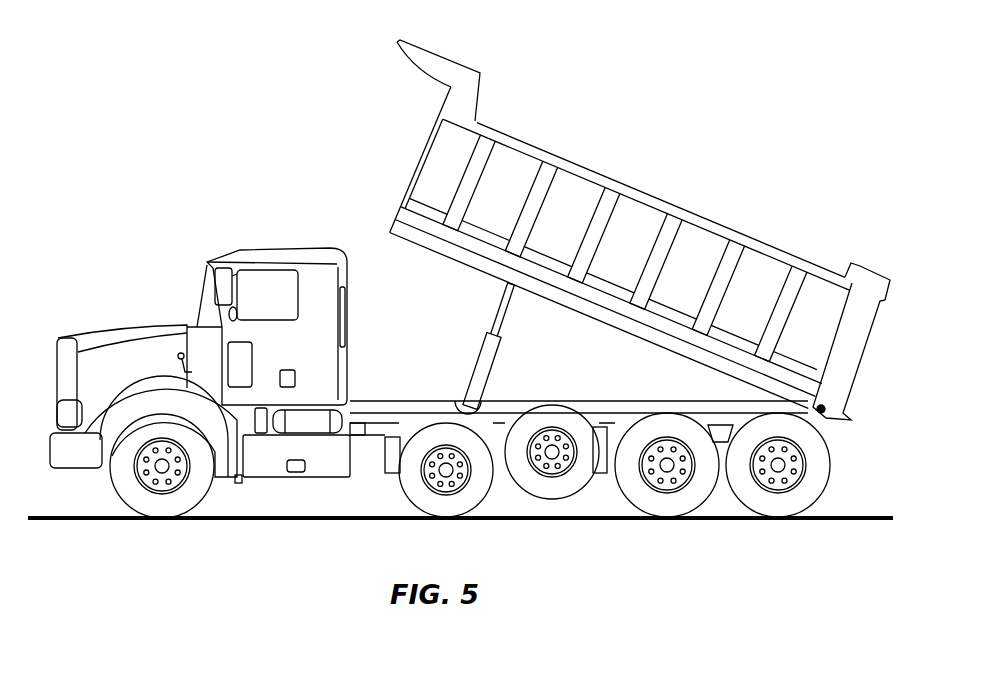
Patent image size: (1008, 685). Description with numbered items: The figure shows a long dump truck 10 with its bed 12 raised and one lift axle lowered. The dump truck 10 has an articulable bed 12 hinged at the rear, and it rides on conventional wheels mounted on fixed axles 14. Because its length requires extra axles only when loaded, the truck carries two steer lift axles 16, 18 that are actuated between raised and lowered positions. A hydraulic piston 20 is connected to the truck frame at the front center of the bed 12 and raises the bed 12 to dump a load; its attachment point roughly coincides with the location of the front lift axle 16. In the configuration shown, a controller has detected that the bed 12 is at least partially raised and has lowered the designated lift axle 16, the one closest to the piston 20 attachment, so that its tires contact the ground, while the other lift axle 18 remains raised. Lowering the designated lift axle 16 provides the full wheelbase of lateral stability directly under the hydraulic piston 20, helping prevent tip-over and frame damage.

The dump truck 10 is at (190, 170).
The articulable bed 12 is at (717, 223).
The fixed axles 14 is at (155, 487).
The front lift axle 16 is at (448, 477).
The lift axle 18 is at (557, 462).
The hydraulic piston 20 is at (485, 348).